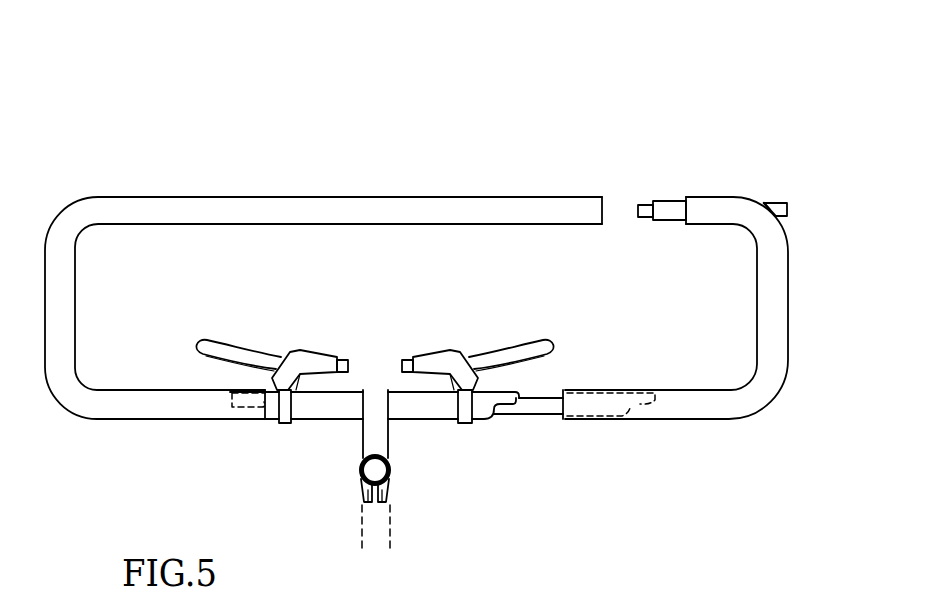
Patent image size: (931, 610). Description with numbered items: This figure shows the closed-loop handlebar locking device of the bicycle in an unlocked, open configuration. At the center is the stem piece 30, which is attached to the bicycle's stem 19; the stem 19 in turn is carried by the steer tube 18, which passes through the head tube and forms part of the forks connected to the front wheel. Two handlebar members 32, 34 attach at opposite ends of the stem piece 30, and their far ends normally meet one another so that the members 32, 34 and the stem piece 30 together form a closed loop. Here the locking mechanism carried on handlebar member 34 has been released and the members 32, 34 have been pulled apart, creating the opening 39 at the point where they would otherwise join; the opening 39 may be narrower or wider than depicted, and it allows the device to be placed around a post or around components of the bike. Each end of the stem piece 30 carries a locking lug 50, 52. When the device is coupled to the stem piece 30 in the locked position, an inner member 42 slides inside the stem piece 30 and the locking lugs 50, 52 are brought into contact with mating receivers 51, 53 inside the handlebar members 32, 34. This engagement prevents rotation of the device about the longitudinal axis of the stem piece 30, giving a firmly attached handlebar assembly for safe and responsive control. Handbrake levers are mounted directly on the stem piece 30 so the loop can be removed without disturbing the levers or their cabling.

The steer tube 18 is at (392, 511).
The stem 19 is at (389, 440).
The stem piece 30 is at (353, 391).
The handlebar member 32 is at (66, 305).
The handlebar member 34 is at (765, 293).
The opening 39 is at (625, 192).
The inner member 42 is at (520, 414).
The locking lug 50 is at (256, 389).
The mating receiver 51 is at (236, 404).
The locking lug 52 is at (510, 392).
The mating receiver 53 is at (640, 402).